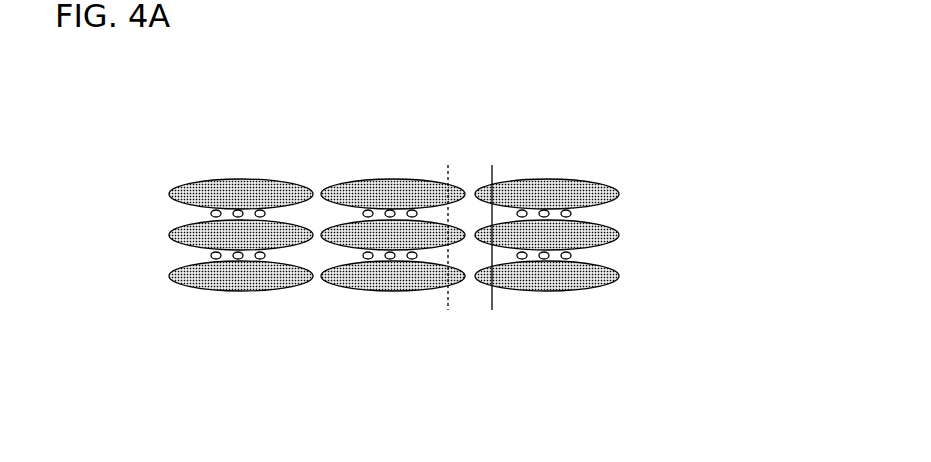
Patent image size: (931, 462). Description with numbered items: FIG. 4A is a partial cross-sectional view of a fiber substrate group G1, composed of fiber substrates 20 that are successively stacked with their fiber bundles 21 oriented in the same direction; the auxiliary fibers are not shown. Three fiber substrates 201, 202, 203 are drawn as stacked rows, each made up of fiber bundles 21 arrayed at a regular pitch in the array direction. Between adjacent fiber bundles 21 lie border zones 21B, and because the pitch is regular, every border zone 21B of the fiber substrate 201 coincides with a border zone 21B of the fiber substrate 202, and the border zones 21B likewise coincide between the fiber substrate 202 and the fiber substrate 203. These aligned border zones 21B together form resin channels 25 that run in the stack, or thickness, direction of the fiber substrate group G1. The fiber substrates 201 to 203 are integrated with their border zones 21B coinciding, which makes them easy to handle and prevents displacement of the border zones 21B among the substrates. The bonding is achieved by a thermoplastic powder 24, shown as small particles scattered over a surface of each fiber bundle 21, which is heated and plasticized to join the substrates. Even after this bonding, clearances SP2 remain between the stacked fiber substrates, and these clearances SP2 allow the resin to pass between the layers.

The fiber substrate 20 is at (463, 229).
The fiber substrate 201 is at (634, 194).
The fiber substrate 202 is at (634, 235).
The fiber substrate 203 is at (634, 276).
The fiber bundle 21 is at (238, 179).
The border zone 21B is at (316, 183).
The thermoplastic powder 24 is at (215, 210).
The resin channel 25 is at (494, 296).
The clearance SP2 is at (167, 211).
The fiber substrate group G1 is at (482, 225).